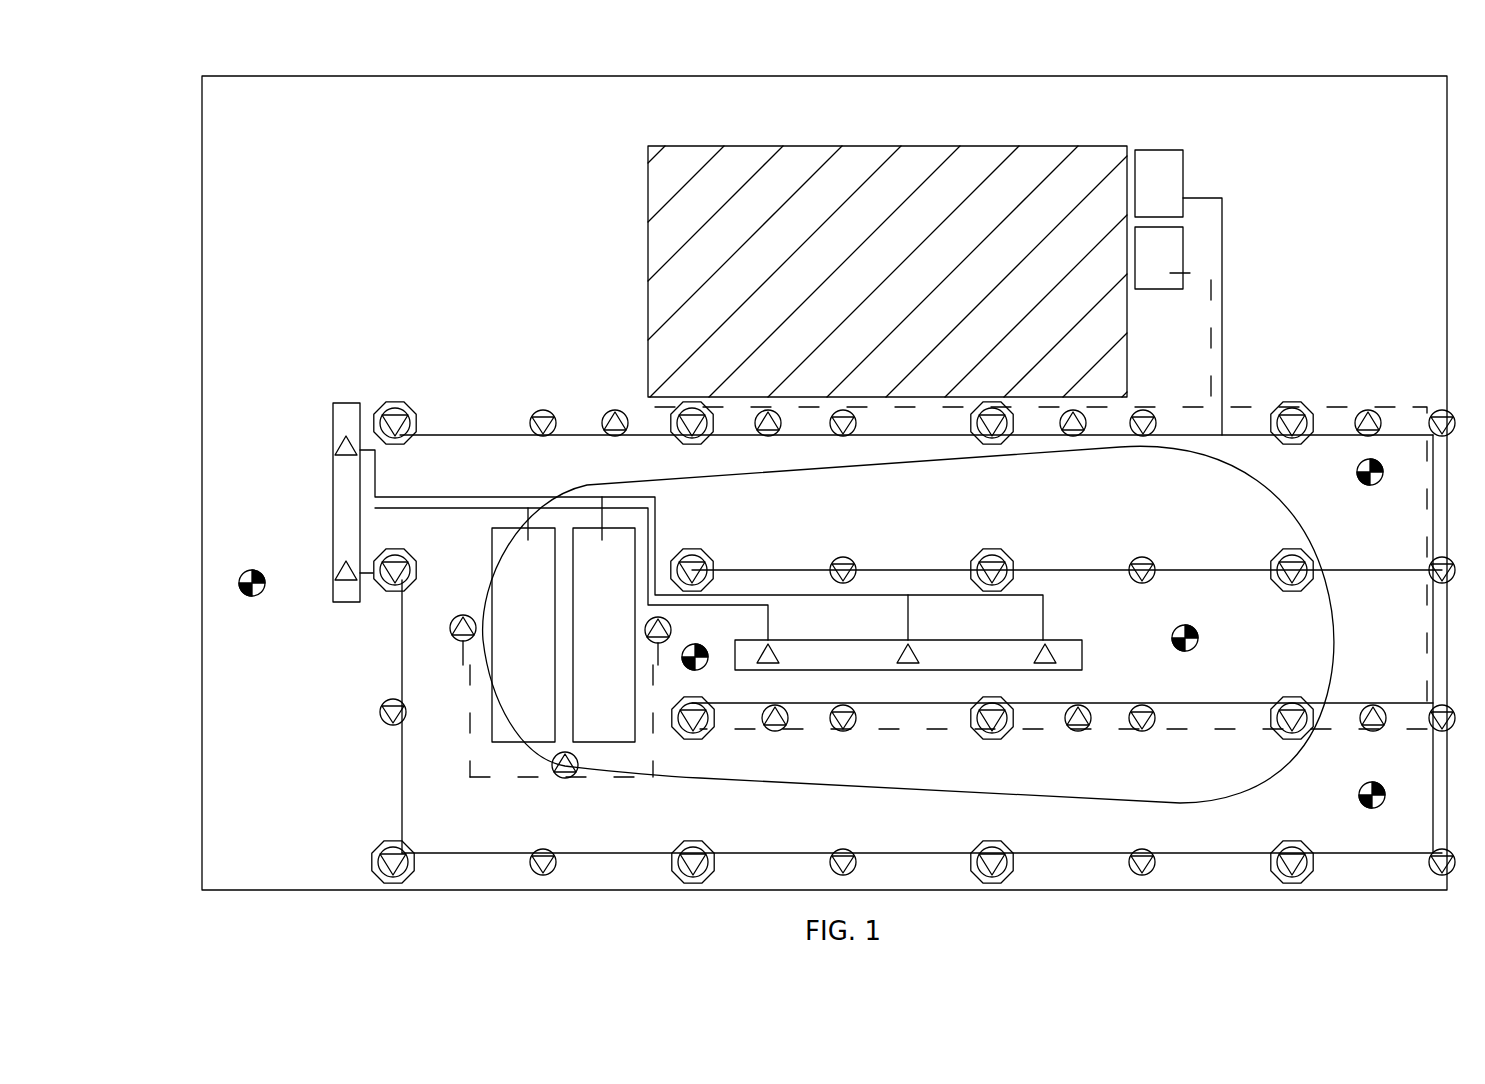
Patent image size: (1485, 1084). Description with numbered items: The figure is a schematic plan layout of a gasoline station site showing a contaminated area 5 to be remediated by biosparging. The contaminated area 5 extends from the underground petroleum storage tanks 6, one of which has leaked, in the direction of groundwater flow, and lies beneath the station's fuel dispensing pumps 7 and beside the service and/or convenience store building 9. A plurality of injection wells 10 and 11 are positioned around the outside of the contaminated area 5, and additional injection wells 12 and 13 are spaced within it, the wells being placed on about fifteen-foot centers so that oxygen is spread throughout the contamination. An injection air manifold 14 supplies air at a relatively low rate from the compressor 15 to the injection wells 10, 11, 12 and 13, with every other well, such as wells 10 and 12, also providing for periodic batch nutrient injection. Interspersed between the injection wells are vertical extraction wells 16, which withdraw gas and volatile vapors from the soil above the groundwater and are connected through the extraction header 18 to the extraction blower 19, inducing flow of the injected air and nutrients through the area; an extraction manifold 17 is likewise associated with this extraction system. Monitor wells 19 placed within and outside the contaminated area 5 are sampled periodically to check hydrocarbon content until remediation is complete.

The contaminated area 5 is at (912, 465).
The underground petroleum storage tanks 6 is at (578, 598).
The fuel dispensing pumps 7 is at (1040, 660).
The service and/or convenience store building 9 is at (660, 240).
The injection wells 10 is at (403, 403).
The injection wells 11 is at (545, 410).
The injection wells 12 is at (690, 550).
The injection wells 13 is at (843, 553).
The injection air manifold 14 is at (1225, 305).
The compressor 15 is at (1175, 177).
The extraction wells 16 is at (615, 410).
The extraction manifold 17 is at (1210, 385).
The extraction header 18 is at (1160, 270).
The extraction blower / monitor wells 19 is at (250, 570).